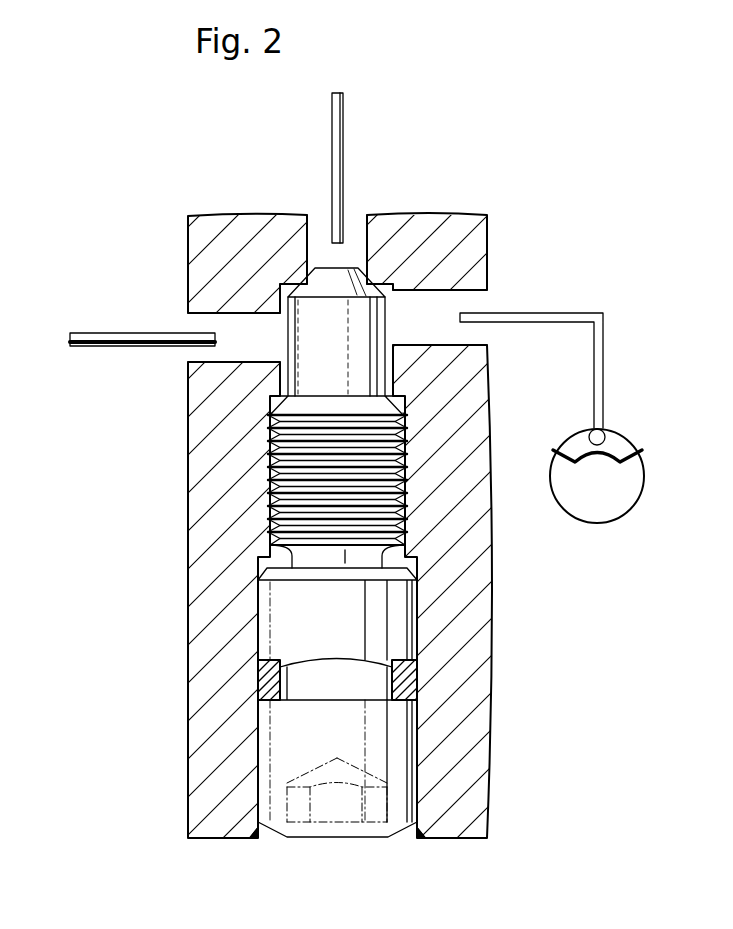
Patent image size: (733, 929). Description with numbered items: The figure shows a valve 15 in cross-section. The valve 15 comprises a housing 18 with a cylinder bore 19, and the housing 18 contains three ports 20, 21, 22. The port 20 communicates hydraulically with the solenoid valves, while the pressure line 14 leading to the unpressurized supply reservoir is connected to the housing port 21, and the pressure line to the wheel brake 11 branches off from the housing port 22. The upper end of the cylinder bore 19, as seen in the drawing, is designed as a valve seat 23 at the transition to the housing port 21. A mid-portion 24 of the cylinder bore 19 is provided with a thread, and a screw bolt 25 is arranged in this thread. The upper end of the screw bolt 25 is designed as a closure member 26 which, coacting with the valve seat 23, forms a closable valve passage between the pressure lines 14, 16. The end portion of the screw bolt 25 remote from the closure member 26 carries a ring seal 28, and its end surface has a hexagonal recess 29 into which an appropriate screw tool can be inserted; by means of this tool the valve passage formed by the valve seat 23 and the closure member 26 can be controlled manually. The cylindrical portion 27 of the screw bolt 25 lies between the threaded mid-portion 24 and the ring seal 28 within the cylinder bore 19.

The wheel brake 11 is at (597, 512).
The pressure line 14 is at (333, 140).
The valve 15 is at (337, 531).
The pressure line 16 is at (594, 369).
The housing 18 is at (470, 752).
The cylinder bore 19 is at (263, 747).
The port 20 is at (200, 325).
The housing port 21 is at (352, 222).
The housing port 22 is at (473, 302).
The valve seat 23 is at (368, 275).
The mid-portion 24 is at (275, 432).
The screw bolt 25 is at (266, 487).
The closure member 26 is at (327, 280).
The cylindrical body 27 is at (263, 618).
The ring seal 28 is at (405, 682).
The hexagonal recess 29 is at (330, 830).